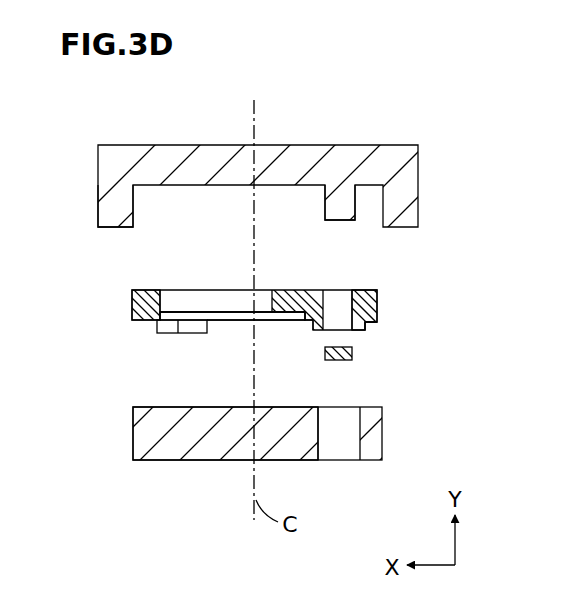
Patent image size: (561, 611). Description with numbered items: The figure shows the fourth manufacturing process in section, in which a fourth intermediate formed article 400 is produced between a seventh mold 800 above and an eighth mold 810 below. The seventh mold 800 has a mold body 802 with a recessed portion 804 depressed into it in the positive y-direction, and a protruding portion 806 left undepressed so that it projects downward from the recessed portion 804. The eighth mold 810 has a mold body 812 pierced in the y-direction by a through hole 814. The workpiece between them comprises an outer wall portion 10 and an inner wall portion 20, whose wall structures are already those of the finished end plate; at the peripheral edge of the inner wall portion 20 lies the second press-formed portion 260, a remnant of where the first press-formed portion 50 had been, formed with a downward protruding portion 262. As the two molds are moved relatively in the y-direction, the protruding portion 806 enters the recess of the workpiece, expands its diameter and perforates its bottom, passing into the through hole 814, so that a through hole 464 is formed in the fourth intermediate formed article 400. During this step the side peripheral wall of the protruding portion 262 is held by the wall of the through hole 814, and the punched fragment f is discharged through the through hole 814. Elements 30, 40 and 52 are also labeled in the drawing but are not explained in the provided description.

The seventh mold 800 is at (400, 101).
The mold body 802 is at (322, 145).
The recessed portion 804 is at (132, 208).
The protruding portion 806 is at (326, 197).
The eighth mold 810 is at (394, 422).
The mold body 812 is at (172, 448).
The through hole 814 is at (350, 444).
The fourth intermediate formed article 400 is at (392, 303).
The outer wall portion 10 is at (286, 286).
The piezoelectric element 30 is at (124, 299).
The sealing portion 40 is at (163, 299).
The through hole 464 is at (345, 290).
The protruding portion 262 is at (357, 333).
The inner wall portion 20 is at (220, 340).
The first press-formed portion 50 is at (238, 336).
The step portion 52 is at (266, 322).
The second press-formed portion 260 is at (155, 340).
The fragment f is at (330, 362).